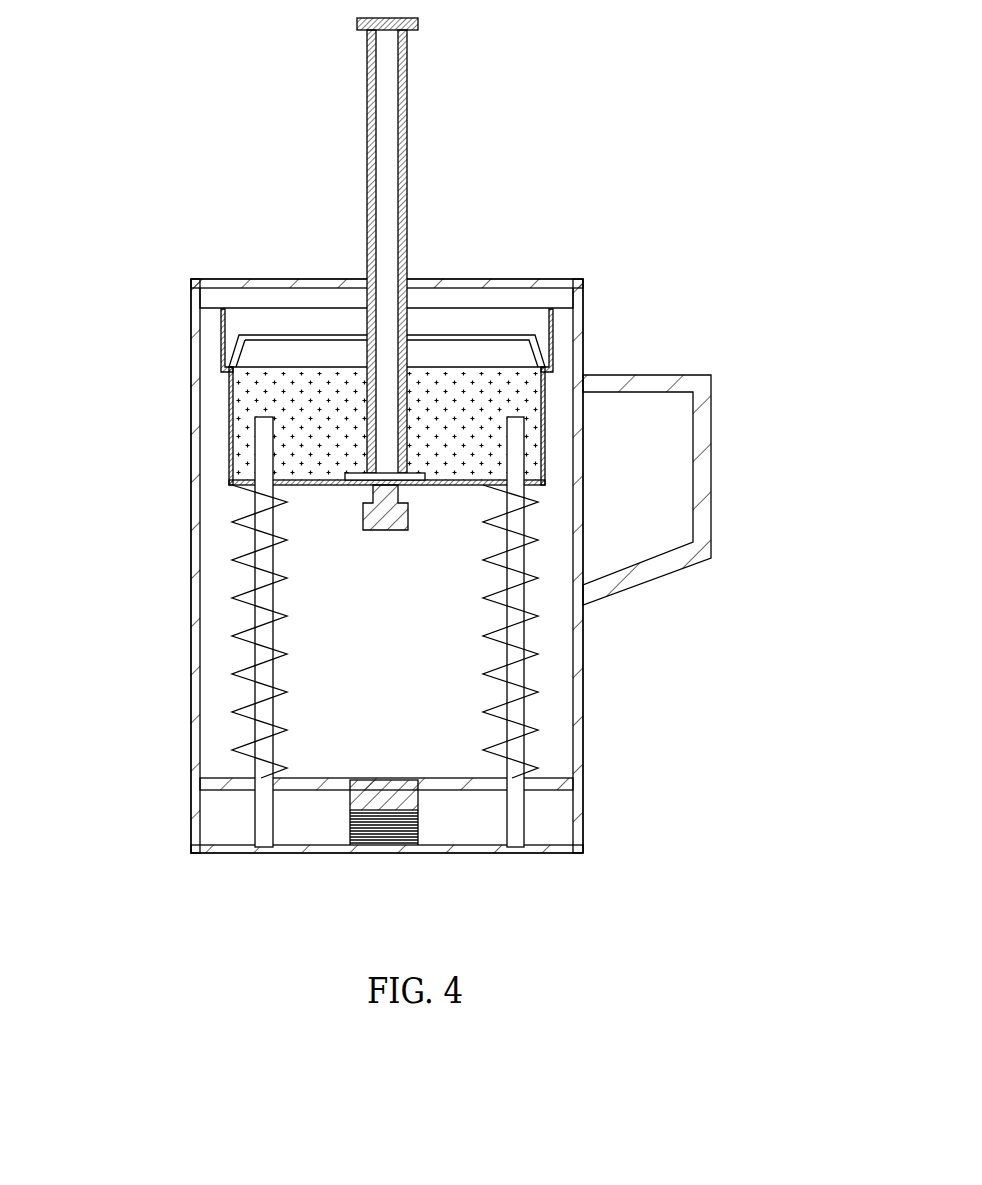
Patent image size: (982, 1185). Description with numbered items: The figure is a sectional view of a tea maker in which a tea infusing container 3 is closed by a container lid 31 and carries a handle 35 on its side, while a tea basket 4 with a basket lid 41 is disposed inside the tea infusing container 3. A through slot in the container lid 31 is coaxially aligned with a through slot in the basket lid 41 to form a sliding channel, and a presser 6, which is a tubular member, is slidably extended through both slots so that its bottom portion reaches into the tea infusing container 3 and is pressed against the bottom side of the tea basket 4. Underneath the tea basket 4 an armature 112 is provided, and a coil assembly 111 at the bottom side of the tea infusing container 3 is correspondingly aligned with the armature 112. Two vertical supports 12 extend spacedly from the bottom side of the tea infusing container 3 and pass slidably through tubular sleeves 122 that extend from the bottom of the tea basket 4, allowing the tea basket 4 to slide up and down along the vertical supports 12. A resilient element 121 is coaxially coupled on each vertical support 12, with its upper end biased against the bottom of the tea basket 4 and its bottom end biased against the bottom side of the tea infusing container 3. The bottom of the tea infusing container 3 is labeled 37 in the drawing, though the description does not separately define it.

The tea infusing container 3 is at (95, 469).
The container lid 31 is at (192, 286).
The base plate 37 is at (193, 827).
The handle 35 is at (702, 472).
The tea basket 4 is at (228, 410).
The basket lid 41 is at (223, 353).
The presser 6 is at (372, 237).
The armature 112 is at (377, 530).
The coil assembly 111 is at (378, 800).
The vertical support 12 is at (262, 663).
The resilient element 121 is at (280, 718).
The tubular sleeve 122 is at (545, 412).